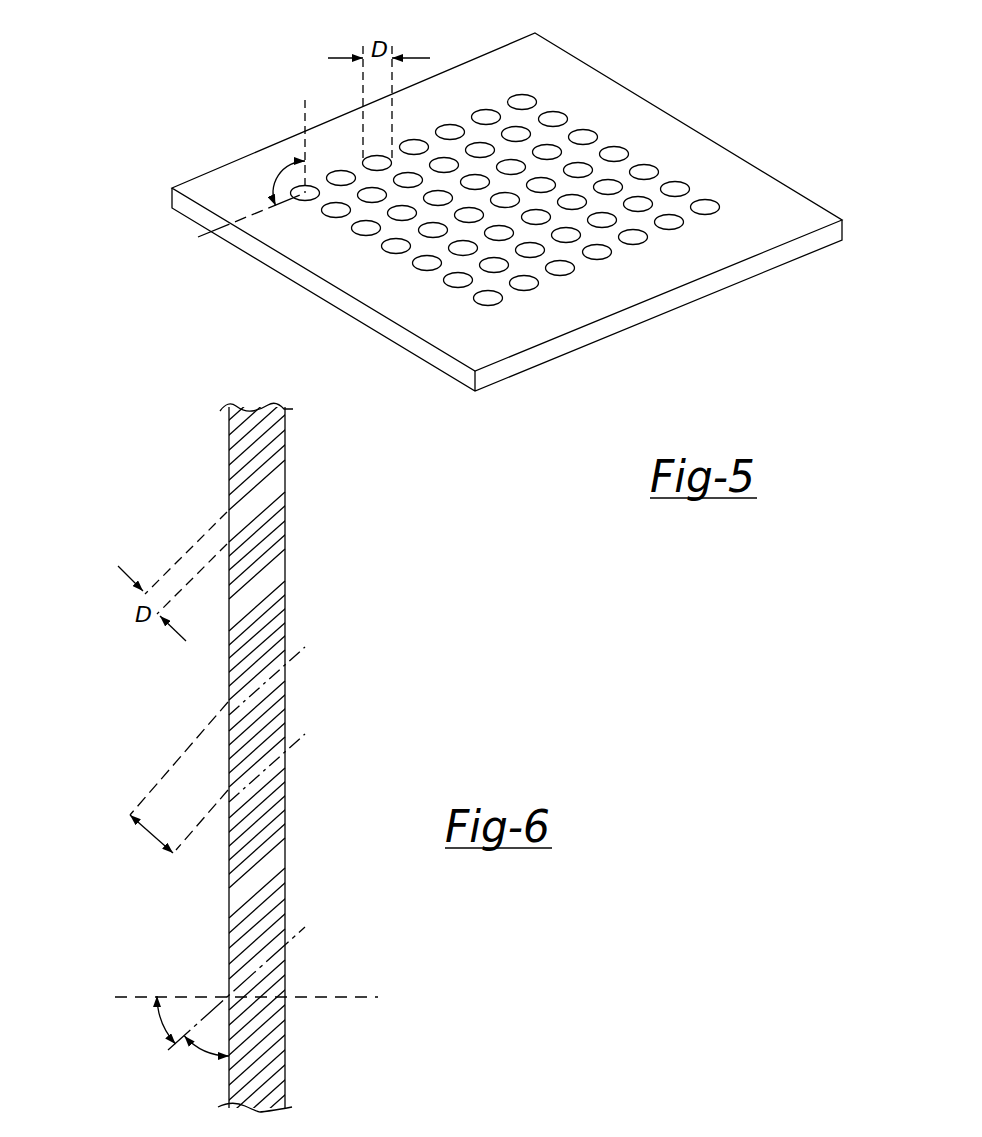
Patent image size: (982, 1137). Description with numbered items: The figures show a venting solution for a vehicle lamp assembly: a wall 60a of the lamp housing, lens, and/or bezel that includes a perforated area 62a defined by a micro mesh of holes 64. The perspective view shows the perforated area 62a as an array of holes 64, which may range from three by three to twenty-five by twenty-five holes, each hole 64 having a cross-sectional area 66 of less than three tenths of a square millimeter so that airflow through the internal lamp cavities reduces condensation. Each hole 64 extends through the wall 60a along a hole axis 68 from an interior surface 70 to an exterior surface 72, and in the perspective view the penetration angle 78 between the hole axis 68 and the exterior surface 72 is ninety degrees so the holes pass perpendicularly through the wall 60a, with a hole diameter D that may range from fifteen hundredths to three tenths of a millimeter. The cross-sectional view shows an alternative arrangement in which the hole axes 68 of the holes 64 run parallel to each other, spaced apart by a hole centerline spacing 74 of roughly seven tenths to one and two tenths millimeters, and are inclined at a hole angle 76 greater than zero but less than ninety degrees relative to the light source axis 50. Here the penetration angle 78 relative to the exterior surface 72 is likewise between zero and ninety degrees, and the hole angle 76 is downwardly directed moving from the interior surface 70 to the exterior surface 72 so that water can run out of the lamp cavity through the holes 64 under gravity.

In FIG. 6, the light source axis 50 is at (125, 995).
In FIG. 5, the wall 60a is at (780, 255).
In FIG. 6, the wall 60a is at (240, 465).
In FIG. 5, the perforated area 62a is at (582, 161).
In FIG. 6, the perforated area 62a is at (163, 738).
In FIG. 5, the hole 64 is at (605, 219).
In FIG. 6, the hole 64 is at (254, 496).
In FIG. 5, the cross-sectional area 66 is at (600, 262).
In FIG. 5, the hole axis 68 is at (303, 100).
In FIG. 6, the hole axis 68 is at (305, 645).
In FIG. 6, the interior surface 70 is at (285, 910).
In FIG. 6, the exterior surface 72 is at (227, 937).
In FIG. 6, the hole centerline spacing 74 is at (150, 836).
In FIG. 6, the hole angle 76 is at (161, 1021).
In FIG. 5, the penetration angle 78 is at (291, 168).
In FIG. 6, the penetration angle 78 is at (222, 1057).